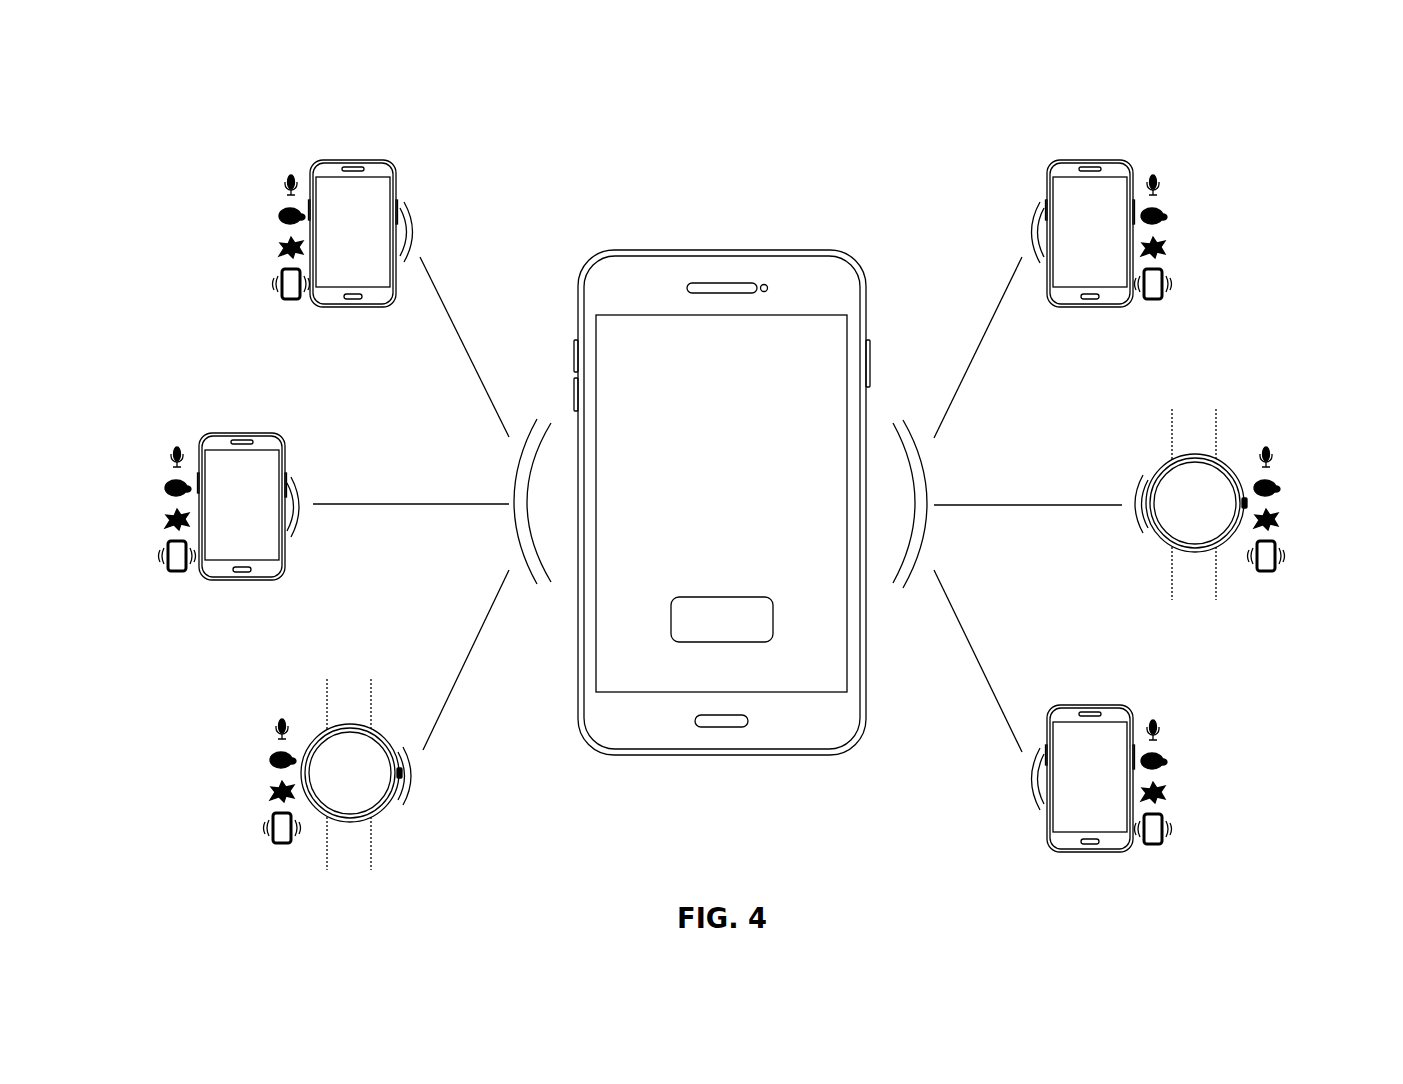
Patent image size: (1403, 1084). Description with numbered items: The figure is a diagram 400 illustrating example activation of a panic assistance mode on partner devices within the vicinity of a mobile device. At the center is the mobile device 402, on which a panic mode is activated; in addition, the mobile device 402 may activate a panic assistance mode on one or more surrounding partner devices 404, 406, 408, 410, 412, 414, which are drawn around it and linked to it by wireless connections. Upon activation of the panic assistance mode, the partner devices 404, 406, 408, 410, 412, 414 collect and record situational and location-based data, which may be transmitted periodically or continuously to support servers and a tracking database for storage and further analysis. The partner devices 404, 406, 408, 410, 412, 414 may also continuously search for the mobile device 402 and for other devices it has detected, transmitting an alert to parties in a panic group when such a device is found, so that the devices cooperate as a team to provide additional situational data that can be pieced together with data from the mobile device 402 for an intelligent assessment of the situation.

The diagram 400 is at (1335, 97).
The mobile device 402 is at (693, 250).
The partner device 404 is at (1088, 160).
The partner device 406 is at (1195, 413).
The partner device 408 is at (1090, 705).
The partner device 410 is at (350, 686).
The partner device 412 is at (242, 432).
The partner device 414 is at (355, 160).